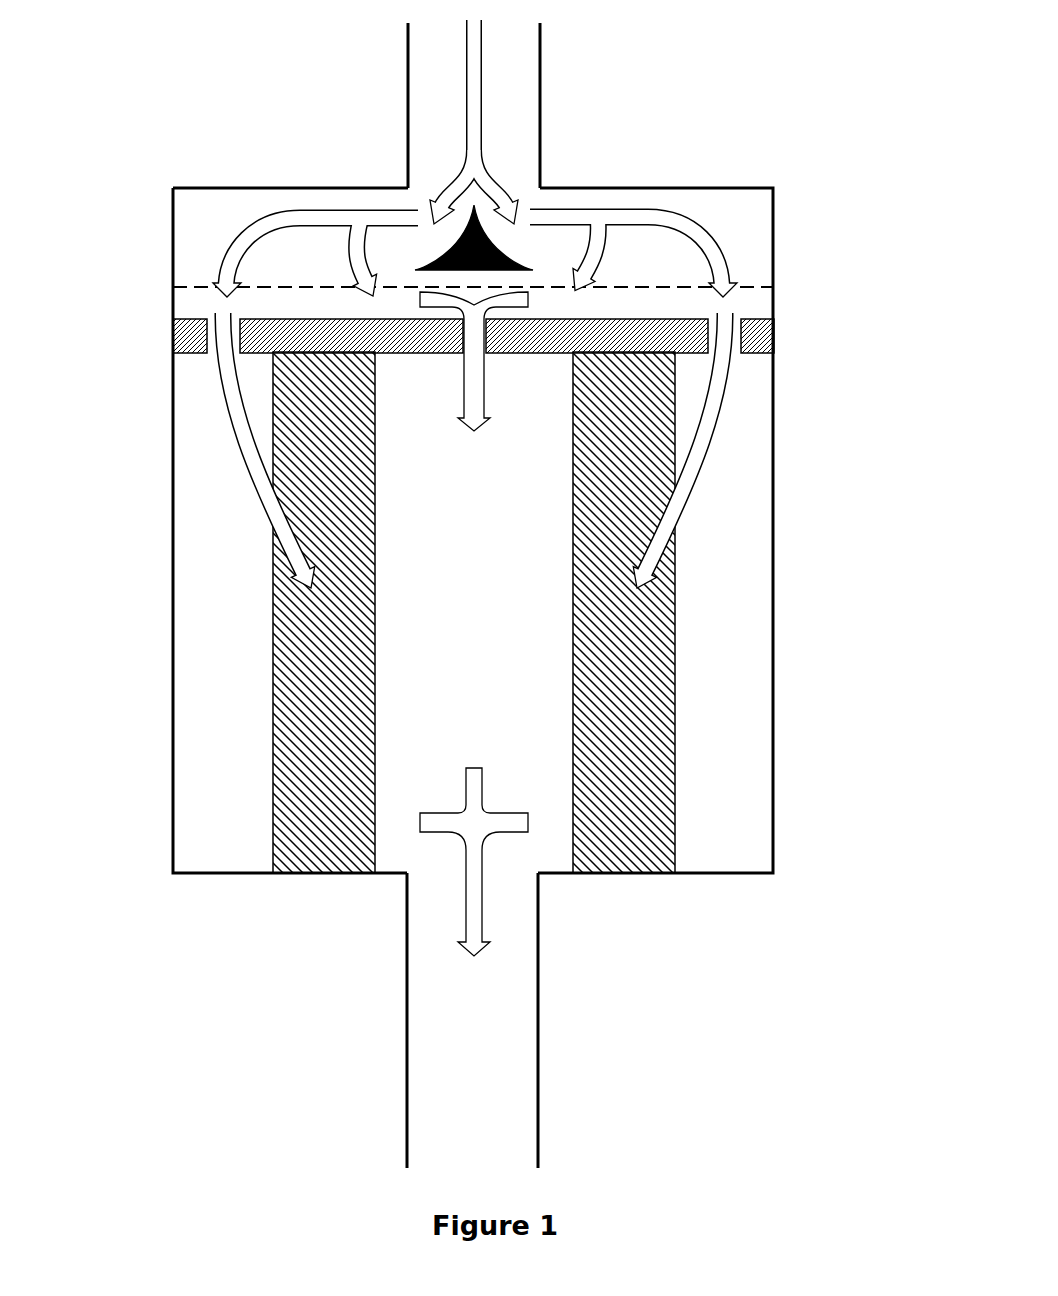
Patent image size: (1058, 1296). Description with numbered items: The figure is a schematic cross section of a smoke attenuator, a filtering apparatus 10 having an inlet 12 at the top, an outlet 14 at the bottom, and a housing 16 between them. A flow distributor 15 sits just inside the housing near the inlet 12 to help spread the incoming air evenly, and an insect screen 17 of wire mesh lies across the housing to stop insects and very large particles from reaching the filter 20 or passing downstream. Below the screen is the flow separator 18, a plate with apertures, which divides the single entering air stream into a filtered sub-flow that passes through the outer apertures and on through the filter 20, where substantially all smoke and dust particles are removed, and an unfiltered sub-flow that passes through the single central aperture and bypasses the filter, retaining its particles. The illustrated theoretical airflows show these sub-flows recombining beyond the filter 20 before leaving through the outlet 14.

The filtering apparatus 10 is at (494, 591).
The inlet 12 is at (540, 57).
The outlet 14 is at (407, 1071).
The flow distributor 15 is at (493, 247).
The housing 16 is at (173, 645).
The insect screen 17 is at (740, 287).
The flow separator 18 is at (773, 335).
The filter 20 is at (273, 600).